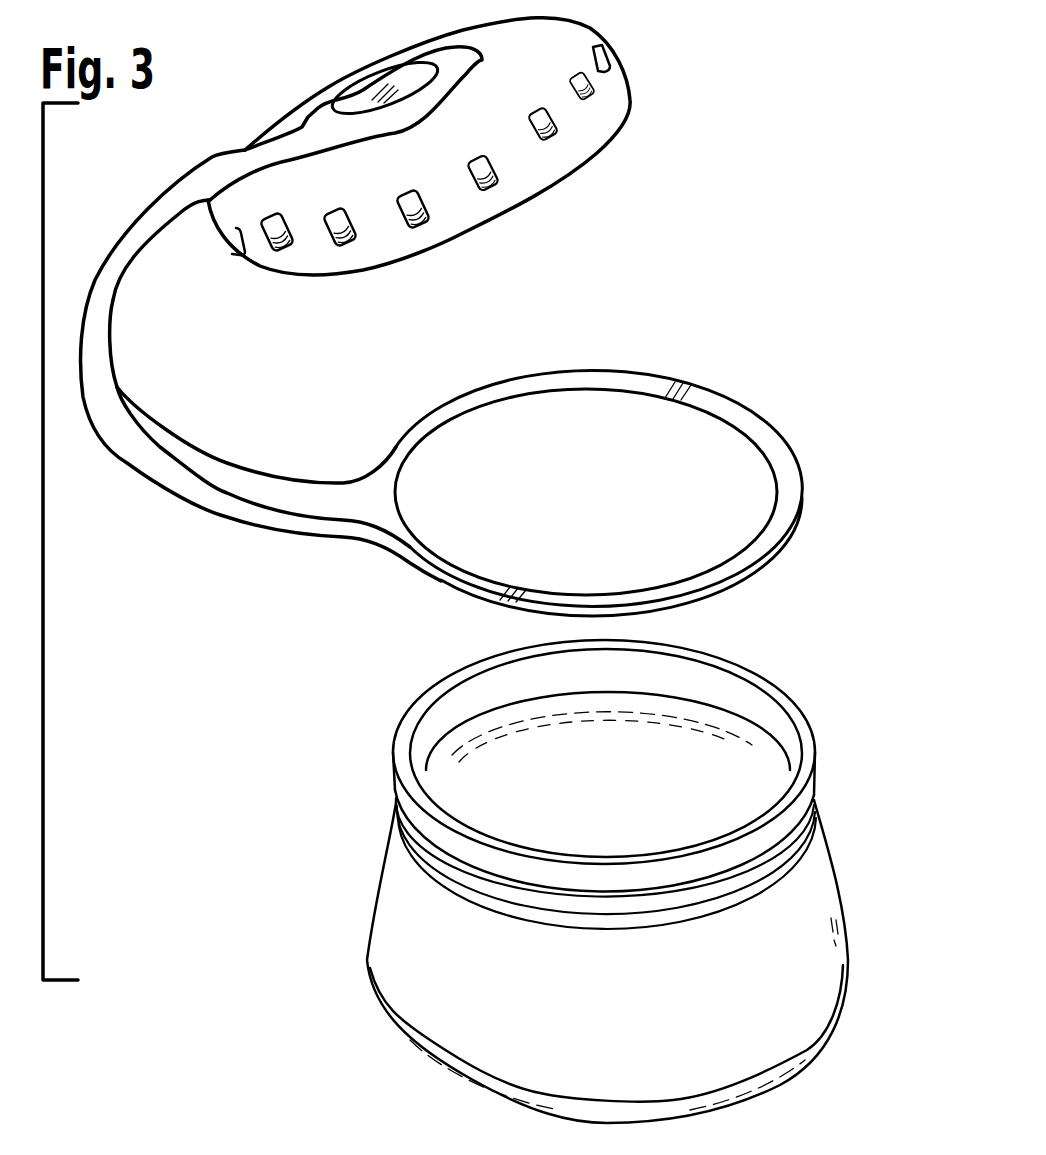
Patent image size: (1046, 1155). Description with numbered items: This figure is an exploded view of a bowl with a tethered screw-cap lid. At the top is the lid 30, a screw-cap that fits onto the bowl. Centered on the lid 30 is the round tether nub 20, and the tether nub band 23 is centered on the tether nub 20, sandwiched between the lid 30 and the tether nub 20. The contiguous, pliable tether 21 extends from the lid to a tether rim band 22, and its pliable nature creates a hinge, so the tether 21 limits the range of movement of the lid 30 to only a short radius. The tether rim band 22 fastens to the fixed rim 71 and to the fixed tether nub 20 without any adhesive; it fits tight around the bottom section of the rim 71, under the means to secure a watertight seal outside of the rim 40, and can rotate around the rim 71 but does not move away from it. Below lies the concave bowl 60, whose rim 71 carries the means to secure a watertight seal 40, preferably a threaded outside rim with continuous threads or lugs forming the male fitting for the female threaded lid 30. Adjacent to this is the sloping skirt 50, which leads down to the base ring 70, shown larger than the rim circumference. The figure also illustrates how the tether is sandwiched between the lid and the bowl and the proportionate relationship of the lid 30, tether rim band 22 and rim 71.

The tether nub 20 is at (405, 80).
The tether 21 is at (98, 352).
The tether rim band 22 is at (568, 378).
The tether nub band 23 is at (355, 128).
The lid 30 is at (437, 178).
The means to secure a watertight seal outside of rim 40 is at (416, 829).
The sloping skirt 50 is at (410, 921).
The concave bowl 60 is at (668, 750).
The base ring 70 is at (432, 1055).
The rim 71 is at (407, 727).